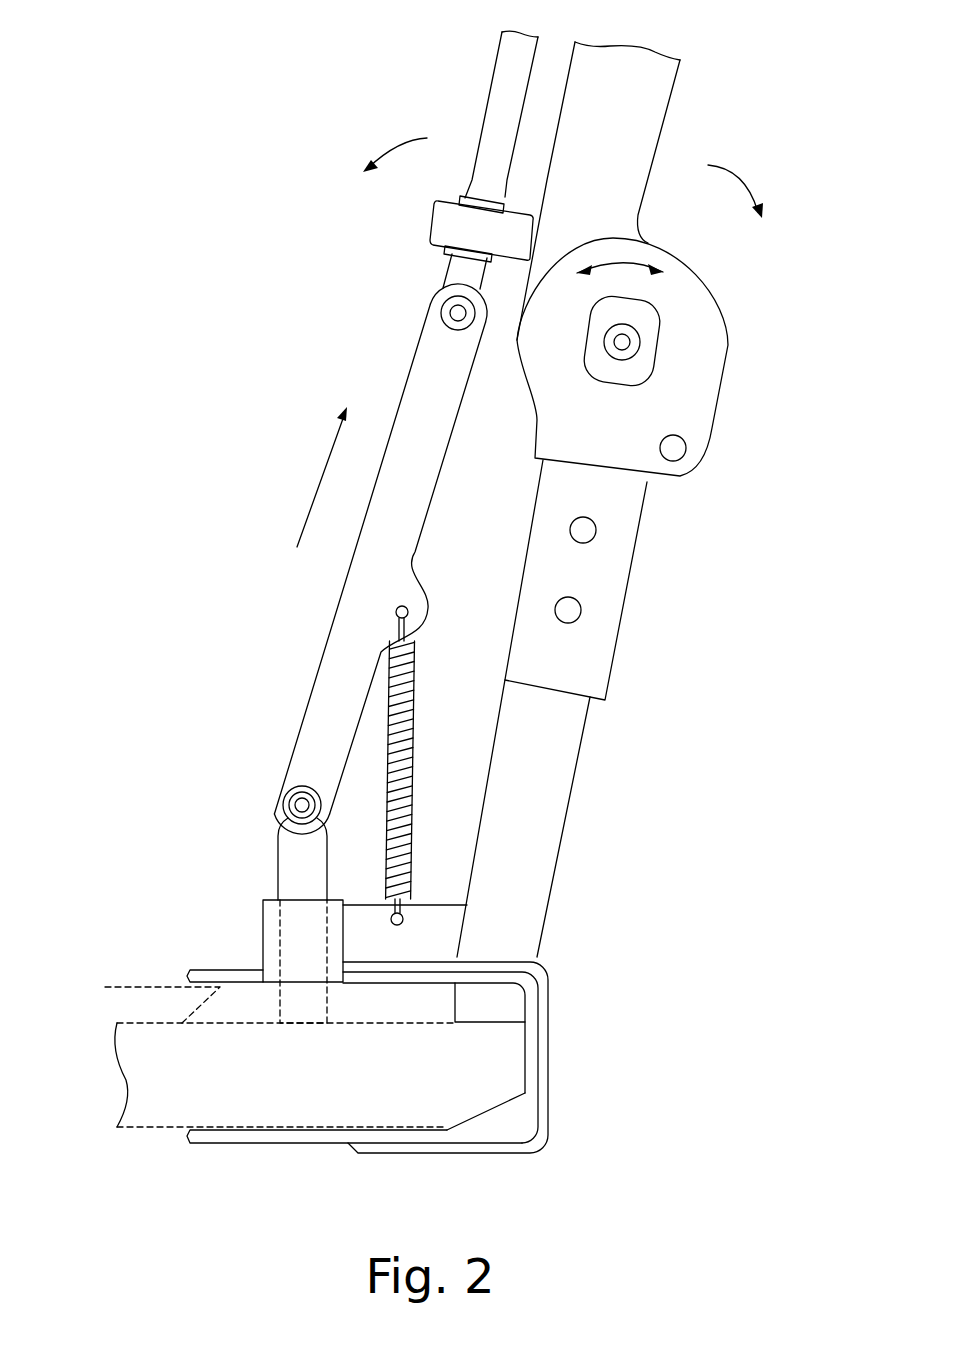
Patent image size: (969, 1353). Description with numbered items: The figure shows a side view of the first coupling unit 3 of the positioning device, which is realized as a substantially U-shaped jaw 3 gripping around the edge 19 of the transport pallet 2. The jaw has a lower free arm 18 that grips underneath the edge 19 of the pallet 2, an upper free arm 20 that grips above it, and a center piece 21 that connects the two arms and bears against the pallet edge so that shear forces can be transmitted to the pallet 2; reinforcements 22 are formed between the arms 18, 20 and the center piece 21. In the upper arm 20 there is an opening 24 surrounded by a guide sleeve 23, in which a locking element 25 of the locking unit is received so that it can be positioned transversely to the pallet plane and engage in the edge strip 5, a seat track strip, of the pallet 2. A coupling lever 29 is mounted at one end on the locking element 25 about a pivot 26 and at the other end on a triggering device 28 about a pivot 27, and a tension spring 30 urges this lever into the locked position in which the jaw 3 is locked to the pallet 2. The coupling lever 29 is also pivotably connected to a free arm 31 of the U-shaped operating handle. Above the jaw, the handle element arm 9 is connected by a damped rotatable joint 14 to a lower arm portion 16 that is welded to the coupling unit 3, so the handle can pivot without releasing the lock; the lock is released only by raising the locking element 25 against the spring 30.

The transport pallet 2 is at (127, 1082).
The first coupling unit 3 is at (578, 1118).
The edge strip 5 is at (223, 997).
The handle element arm 9 is at (645, 88).
The rotatable joint 14 is at (638, 343).
The lower arm portion 16 is at (548, 785).
The lower free arm 18 is at (295, 1137).
The edge 19 is at (521, 1070).
The upper free arm 20 is at (238, 977).
The center piece 21 is at (543, 1038).
The reinforcements 22 is at (508, 1005).
The guide sleeve 23 is at (270, 923).
The opening 24 is at (268, 996).
The locking element 25 is at (290, 873).
The pivot 26 is at (302, 805).
The pivot 27 is at (458, 313).
The triggering device 28 is at (447, 183).
The coupling lever 29 is at (318, 680).
The tension spring 30 is at (410, 793).
The free arm 31 is at (503, 72).